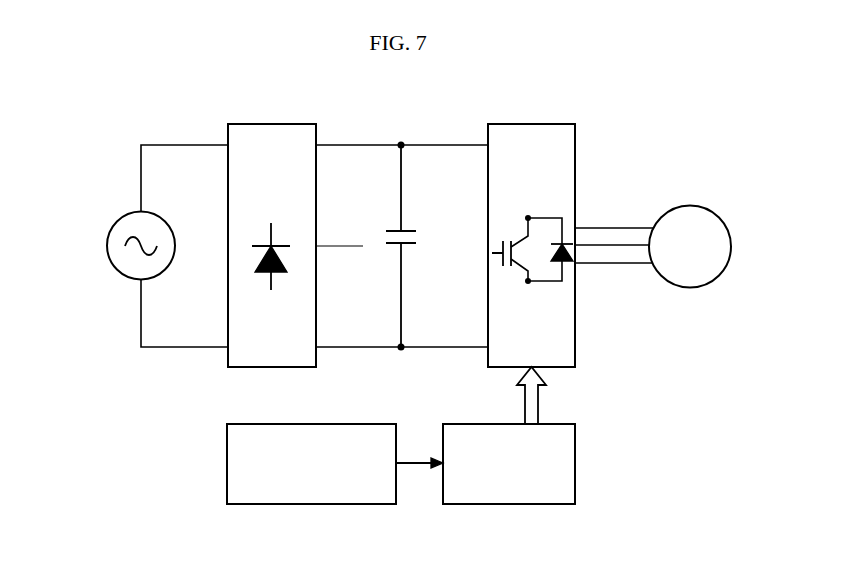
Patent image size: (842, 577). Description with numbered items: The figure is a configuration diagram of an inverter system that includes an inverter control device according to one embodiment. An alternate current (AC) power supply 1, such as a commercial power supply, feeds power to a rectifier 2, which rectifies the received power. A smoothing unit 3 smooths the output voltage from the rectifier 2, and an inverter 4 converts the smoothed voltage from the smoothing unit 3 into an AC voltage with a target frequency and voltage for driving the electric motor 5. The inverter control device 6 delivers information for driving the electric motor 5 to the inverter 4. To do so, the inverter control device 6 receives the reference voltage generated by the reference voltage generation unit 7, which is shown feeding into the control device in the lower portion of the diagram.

The alternate current (AC) power supply 1 is at (107, 245).
The rectifier 2 is at (271, 124).
The smoothing unit 3 is at (408, 232).
The inverter 4 is at (531, 124).
The electric motor 5 is at (689, 205).
The inverter control device 6 is at (510, 504).
The reference voltage generation unit 7 is at (312, 504).